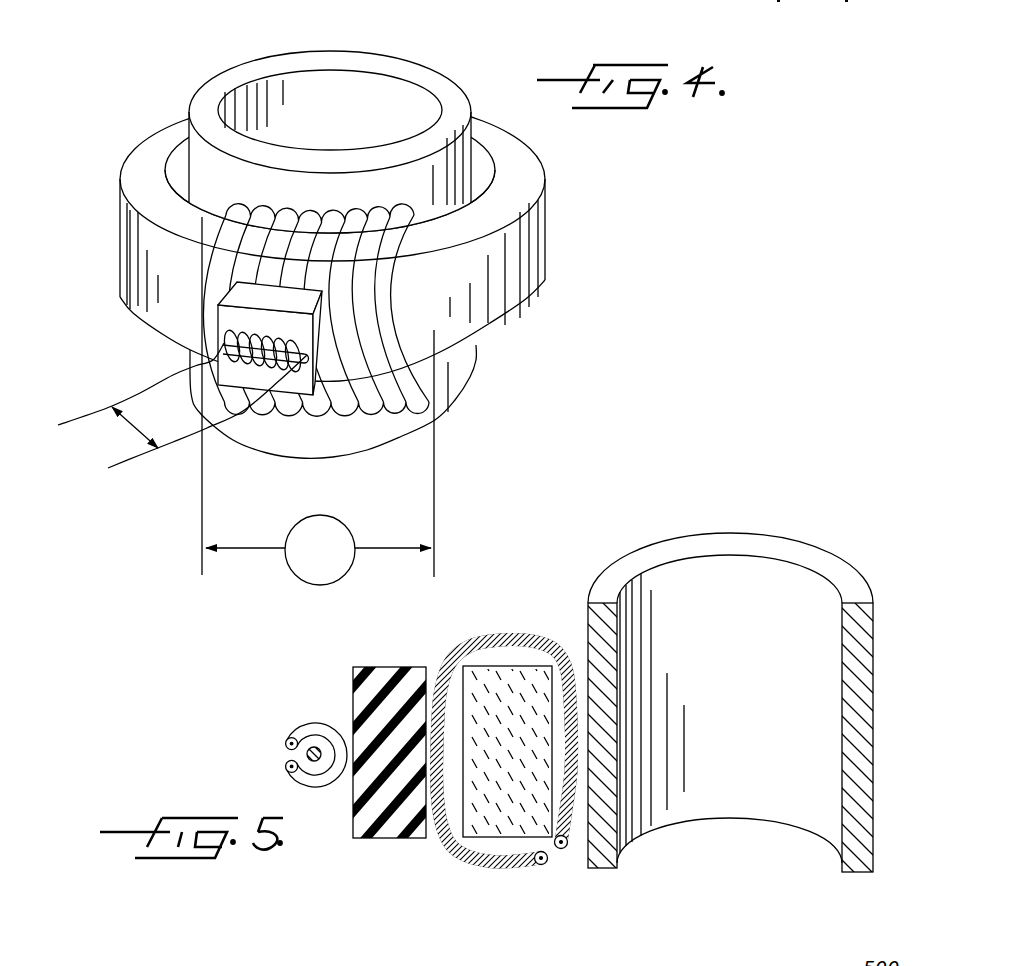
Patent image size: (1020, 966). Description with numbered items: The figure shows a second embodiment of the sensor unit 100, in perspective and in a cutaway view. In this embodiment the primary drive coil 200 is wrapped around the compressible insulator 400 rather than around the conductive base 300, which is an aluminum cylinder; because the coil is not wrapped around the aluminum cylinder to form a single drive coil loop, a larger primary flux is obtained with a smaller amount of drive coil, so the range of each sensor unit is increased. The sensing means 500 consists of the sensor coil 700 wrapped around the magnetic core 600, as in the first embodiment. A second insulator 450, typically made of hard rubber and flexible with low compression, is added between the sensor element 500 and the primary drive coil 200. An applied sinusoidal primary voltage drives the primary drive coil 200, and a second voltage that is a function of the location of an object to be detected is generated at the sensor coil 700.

In FIG. 4, the sensor unit 100 is at (162, 96).
In FIG. 5, the sensor unit 100 is at (553, 590).
In FIG. 4, the primary drive coil 200 is at (380, 285).
In FIG. 5, the primary drive coil 200 is at (510, 638).
In FIG. 4, the conductive base 300 is at (397, 65).
In FIG. 5, the conductive base 300 is at (803, 548).
In FIG. 4, the compressible insulator 400 is at (534, 216).
In FIG. 5, the compressible insulator 400 is at (495, 834).
In FIG. 4, the second insulator 450 is at (237, 298).
In FIG. 5, the second insulator 450 is at (388, 672).
In FIG. 4, the sensing means 500 is at (196, 333).
In FIG. 5, the sensing means 500 is at (286, 727).
In FIG. 4, the magnetic core 600 is at (307, 355).
In FIG. 5, the magnetic core 600 is at (306, 755).
In FIG. 4, the sensor coil 700 is at (195, 366).
In FIG. 5, the sensor coil 700 is at (304, 727).